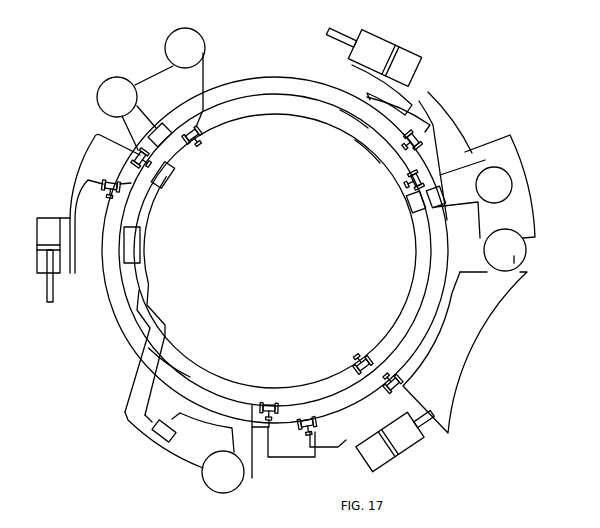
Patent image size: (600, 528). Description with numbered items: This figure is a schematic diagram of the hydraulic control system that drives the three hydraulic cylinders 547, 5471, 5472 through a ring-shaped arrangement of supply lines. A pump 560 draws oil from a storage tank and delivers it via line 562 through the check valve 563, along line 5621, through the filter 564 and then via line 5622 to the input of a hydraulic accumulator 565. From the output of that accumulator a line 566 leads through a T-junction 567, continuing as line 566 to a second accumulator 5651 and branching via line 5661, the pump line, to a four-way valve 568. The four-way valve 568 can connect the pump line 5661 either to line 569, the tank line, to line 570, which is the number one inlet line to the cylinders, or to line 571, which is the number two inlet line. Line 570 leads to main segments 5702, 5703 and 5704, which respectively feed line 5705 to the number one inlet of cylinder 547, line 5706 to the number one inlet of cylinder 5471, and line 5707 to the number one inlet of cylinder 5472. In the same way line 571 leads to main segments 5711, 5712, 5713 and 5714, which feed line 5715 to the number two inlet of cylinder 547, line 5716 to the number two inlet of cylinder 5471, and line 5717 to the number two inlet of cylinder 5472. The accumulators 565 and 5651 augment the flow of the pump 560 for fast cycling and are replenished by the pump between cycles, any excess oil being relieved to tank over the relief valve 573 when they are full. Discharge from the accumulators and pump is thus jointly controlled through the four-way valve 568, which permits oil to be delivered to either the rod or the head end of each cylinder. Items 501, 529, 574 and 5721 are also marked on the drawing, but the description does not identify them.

The gauge connection line 501 is at (124, 80).
The outer annular channel 529 is at (286, 78).
The hydraulic cylinder 547 is at (418, 50).
The pump 560 is at (170, 34).
The line 562 is at (208, 66).
The valve 563 is at (199, 145).
The filter 564 is at (140, 246).
The hydraulic accumulator 565 is at (238, 478).
The line 566 is at (312, 382).
The T-junction 567 is at (363, 355).
The 4-way valve 568 is at (528, 252).
The line 569 is at (367, 155).
The line 570 is at (424, 338).
The line 571 is at (510, 134).
The relief valve 573 is at (155, 442).
The channel segment 574 is at (157, 194).
The cylinder 5471 is at (416, 452).
The cylinder 5472 is at (60, 268).
The line 5621 is at (168, 177).
The line 5622 is at (152, 314).
The accumulator 5651 is at (508, 178).
The line 5661 is at (428, 363).
The main segment 5702 is at (322, 421).
The main segment 5703 is at (232, 399).
The main segment 5704 is at (170, 112).
The line 5705 is at (376, 82).
The line 5706 is at (343, 450).
The line 5707 is at (58, 217).
The main segment 5711 is at (364, 130).
The main segment 5712 is at (418, 215).
The main segment 5713 is at (192, 379).
The main segment 5714 is at (217, 103).
The line 5715 is at (412, 86).
The line 5716 is at (268, 460).
The line 5717 is at (84, 180).
The junction block 5721 is at (182, 414).